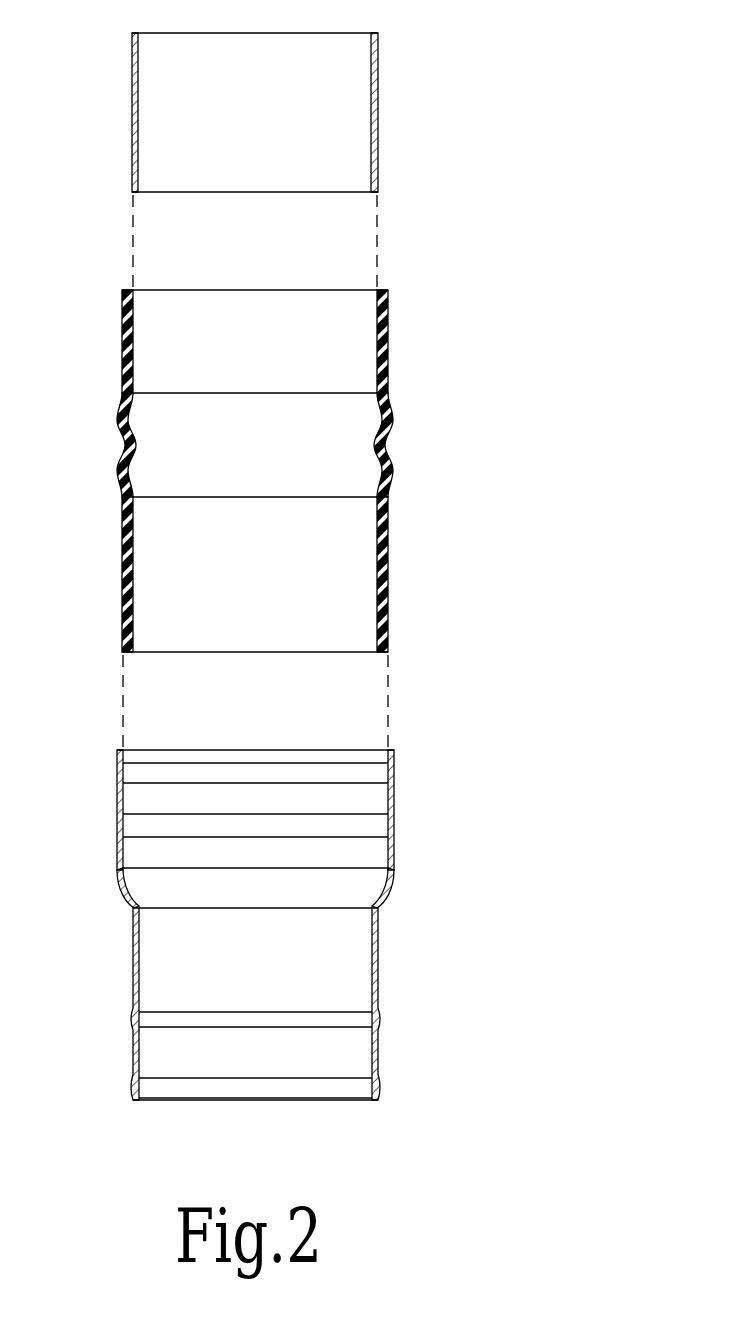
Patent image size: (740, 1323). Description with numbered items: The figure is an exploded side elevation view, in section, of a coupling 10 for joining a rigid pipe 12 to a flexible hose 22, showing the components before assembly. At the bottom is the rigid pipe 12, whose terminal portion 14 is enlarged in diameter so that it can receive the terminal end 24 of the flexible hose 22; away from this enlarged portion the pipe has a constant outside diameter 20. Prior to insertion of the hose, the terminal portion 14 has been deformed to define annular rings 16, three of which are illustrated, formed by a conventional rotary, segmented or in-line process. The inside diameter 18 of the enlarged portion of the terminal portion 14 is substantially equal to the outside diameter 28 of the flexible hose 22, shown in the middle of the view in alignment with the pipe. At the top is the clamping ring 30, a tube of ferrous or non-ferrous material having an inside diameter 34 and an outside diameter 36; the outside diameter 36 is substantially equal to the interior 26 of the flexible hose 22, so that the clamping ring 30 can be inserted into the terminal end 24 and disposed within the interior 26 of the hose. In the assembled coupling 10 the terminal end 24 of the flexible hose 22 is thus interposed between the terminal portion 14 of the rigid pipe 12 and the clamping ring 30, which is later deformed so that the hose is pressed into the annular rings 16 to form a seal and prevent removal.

The coupling 10 is at (306, 566).
The rigid pipe 12 is at (239, 925).
The terminal portion of the rigid pipe 14 is at (397, 800).
The annular ring 16 is at (117, 775).
The inside diameter 18 is at (130, 942).
The outside diameter 20 is at (133, 975).
The flexible hose 22 is at (253, 471).
The terminal end of the flexible hose 24 is at (390, 598).
The interior 26 is at (124, 328).
The outside diameter 28 is at (122, 375).
The clamping ring 30 is at (294, 115).
The inside diameter 34 is at (378, 150).
The outside diameter 36 is at (377, 181).